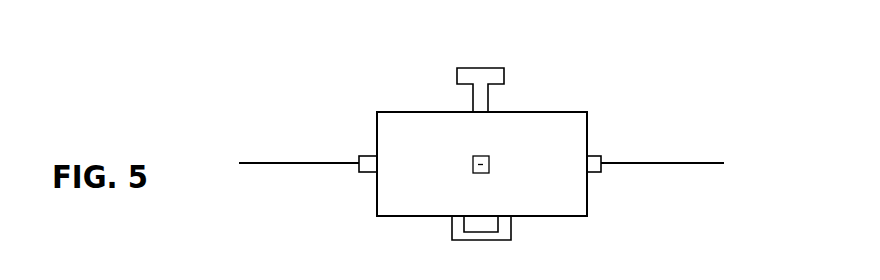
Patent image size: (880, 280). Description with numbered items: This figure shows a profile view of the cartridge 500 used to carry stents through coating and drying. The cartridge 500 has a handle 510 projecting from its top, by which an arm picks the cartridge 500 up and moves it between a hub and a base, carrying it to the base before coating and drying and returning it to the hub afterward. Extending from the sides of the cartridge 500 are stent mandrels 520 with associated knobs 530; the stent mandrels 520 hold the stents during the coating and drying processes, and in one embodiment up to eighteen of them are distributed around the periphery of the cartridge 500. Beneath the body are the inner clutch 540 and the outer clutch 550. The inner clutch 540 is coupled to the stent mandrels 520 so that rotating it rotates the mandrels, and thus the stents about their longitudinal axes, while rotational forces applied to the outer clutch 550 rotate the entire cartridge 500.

The cartridge 500 is at (330, 71).
The handle 510 is at (504, 74).
The stent mandrels 520 is at (263, 164).
The knobs 530 is at (358, 171).
The inner clutch 540 is at (471, 233).
The outer clutch 550 is at (512, 221).